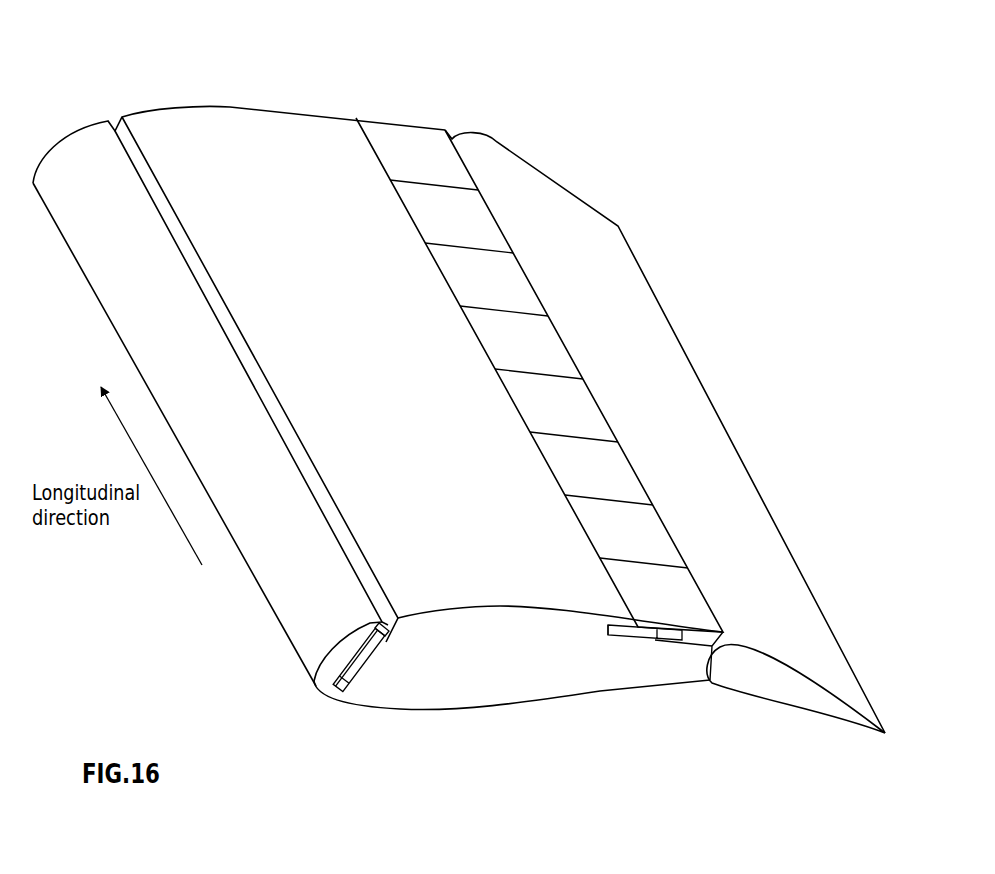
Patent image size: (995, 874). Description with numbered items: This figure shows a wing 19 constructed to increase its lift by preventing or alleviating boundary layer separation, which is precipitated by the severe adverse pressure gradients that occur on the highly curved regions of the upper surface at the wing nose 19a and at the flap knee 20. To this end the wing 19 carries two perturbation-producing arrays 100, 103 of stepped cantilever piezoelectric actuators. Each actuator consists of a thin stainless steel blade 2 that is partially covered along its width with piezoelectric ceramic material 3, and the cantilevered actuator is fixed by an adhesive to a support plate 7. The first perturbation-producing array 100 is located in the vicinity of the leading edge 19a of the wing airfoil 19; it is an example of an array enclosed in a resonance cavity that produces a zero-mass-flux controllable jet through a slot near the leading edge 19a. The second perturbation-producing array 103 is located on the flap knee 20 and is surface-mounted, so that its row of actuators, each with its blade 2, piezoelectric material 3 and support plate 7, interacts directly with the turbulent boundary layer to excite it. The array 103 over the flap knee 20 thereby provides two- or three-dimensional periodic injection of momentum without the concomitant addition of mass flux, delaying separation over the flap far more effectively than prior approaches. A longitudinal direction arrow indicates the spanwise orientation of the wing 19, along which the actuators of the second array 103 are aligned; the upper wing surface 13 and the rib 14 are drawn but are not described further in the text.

The thin stainless steel blade 2 is at (406, 165).
The piezoelectric ceramic material 3 is at (618, 623).
The support plate 7 is at (322, 692).
The wing upper surface 13 is at (267, 125).
The rib 14 is at (332, 508).
The wing 19 is at (550, 693).
The wing nose 19a is at (267, 568).
The flap knee 20 is at (770, 685).
The first perturbation-producing array 100 is at (368, 665).
The second perturbation-producing array 103 is at (448, 125).